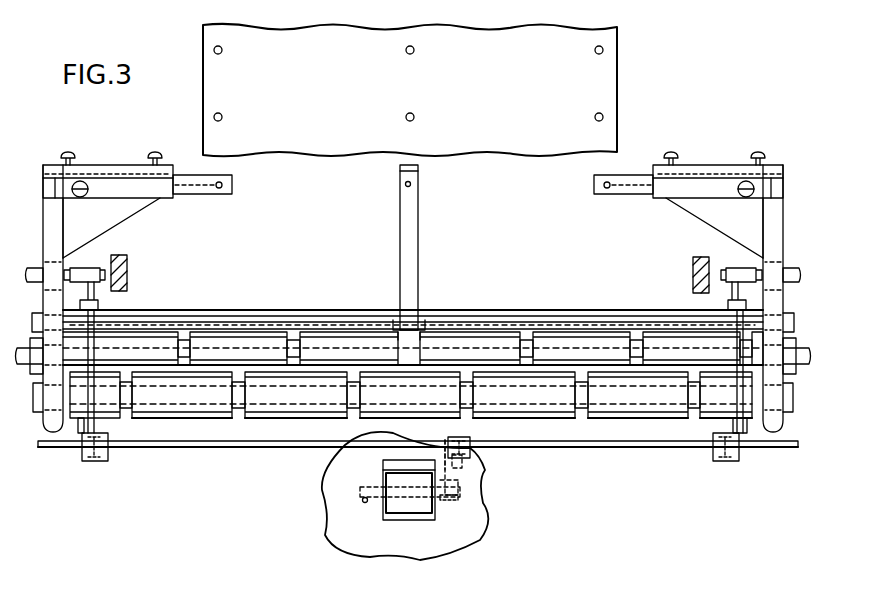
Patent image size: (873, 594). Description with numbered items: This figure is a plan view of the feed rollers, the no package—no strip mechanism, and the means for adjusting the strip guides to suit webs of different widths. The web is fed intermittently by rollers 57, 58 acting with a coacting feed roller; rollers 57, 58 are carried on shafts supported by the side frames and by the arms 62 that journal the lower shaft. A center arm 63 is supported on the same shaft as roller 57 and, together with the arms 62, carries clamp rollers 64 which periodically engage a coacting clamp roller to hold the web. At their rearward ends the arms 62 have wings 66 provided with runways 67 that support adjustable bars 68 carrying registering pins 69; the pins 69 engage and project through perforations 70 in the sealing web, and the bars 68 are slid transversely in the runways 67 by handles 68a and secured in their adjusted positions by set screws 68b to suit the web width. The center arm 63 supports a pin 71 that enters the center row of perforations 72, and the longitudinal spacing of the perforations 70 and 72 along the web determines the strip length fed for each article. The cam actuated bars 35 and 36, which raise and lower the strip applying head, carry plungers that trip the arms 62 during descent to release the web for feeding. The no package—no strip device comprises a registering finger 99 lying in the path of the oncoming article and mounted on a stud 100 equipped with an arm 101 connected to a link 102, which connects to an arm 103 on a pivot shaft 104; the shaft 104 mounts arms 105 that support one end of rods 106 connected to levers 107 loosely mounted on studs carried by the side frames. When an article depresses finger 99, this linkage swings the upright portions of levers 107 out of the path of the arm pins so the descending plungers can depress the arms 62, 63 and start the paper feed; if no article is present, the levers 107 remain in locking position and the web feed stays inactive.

The cam actuated bar 35 is at (128, 268).
The cam actuated bar 36 is at (692, 268).
The roller 57 is at (215, 345).
The roller 58 is at (262, 420).
The arm 62 is at (50, 292).
The center arm 63 is at (418, 278).
The clamp roller 64 is at (268, 316).
The wing 66 is at (118, 212).
The runway 67 is at (44, 185).
The adjustable bar 68 is at (198, 196).
The handle 68a is at (86, 184).
The set screw 68b is at (68, 152).
The registering pin 69 is at (224, 186).
The perforation 70 is at (215, 114).
The pin 71 is at (411, 184).
The perforation 72 is at (410, 113).
The registering finger 99 is at (410, 508).
The stud 100 is at (365, 503).
The arm 101 is at (460, 497).
The link 102 is at (462, 466).
The arm 103 is at (470, 438).
The pivot shaft 104 is at (620, 448).
The arm 105 is at (98, 462).
The rod 106 is at (96, 428).
The lever 107 is at (98, 292).